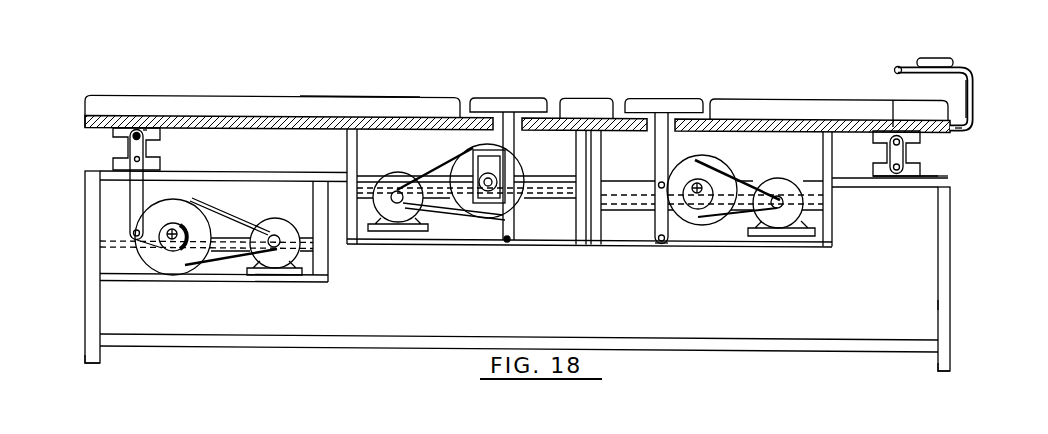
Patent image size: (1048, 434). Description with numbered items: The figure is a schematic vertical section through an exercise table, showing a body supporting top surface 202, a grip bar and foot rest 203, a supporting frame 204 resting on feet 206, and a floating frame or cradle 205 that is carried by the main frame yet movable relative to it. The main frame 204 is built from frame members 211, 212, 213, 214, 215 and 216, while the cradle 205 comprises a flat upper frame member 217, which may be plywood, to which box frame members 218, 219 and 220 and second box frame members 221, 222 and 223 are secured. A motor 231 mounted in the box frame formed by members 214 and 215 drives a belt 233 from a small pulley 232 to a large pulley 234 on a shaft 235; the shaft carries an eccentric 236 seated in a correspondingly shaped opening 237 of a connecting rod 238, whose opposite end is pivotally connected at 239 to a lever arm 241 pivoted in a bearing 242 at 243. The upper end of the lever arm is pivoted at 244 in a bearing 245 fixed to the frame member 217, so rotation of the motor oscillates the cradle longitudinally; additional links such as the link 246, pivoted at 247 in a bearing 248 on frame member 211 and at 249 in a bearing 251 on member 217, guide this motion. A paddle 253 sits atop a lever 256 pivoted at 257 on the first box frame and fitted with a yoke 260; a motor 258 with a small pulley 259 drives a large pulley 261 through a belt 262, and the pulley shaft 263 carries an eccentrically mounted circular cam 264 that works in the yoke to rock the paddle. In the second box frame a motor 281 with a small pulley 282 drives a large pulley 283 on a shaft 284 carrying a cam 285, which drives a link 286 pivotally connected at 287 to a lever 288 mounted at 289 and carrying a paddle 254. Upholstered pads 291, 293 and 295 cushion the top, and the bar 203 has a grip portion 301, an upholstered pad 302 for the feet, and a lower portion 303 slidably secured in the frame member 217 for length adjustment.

The top surface 202 is at (257, 96).
The grip bar and foot rest 203 is at (972, 85).
The supporting frame 204 is at (950, 253).
The floating frame 205 is at (833, 232).
The feet 206 is at (87, 360).
The frame member 211 is at (848, 183).
The frame member 212 is at (862, 343).
The frame member 213 is at (90, 310).
The frame member 214 is at (275, 279).
The frame member 215 is at (330, 274).
The frame member 216 is at (938, 307).
The frame member 217 is at (246, 121).
The box frame member 218 is at (347, 162).
The box frame member 219 is at (457, 238).
The box frame member 220 is at (587, 232).
The second box frame member 221 is at (597, 232).
The second box frame member 222 is at (760, 243).
The second box frame member 223 is at (824, 158).
The motor 231 is at (329, 265).
The small pulley 232 is at (277, 238).
The belt 233 is at (238, 213).
The large pulley 234 is at (163, 210).
The shaft 235 is at (197, 262).
The eccentric 236 is at (170, 252).
The opening 237 is at (172, 245).
The connecting rod 238 is at (138, 246).
The pivot connection 239 is at (103, 244).
The lever arm 241 is at (135, 197).
The bearing 242 is at (146, 156).
The pivot 243 is at (134, 159).
The pivot connection 244 is at (133, 135).
The bearing 245 is at (147, 128).
The link 246 is at (907, 145).
The pivot 247 is at (913, 172).
The bearing 248 is at (937, 177).
The pivot 249 is at (893, 127).
The bearing 251 is at (888, 100).
The paddle 253 is at (508, 110).
The paddle 254 is at (668, 110).
The lever 256 is at (513, 140).
The pivot 257 is at (508, 239).
The motor 258 is at (405, 178).
The pulley 259 is at (395, 202).
The yoke 260 is at (470, 148).
The pulley 261 is at (510, 160).
The belt 262 is at (445, 216).
The shaft 263 is at (486, 191).
The cam 264 is at (491, 191).
The motor 281 is at (775, 180).
The pulley 282 is at (698, 163).
The pulley 283 is at (745, 115).
The shaft 284 is at (699, 203).
The cam 285 is at (705, 201).
The link 286 is at (660, 184).
The pivot connection 287 is at (660, 192).
The lever 288 is at (663, 241).
The pivot 289 is at (662, 270).
The upholstered pad 291 is at (367, 96).
The upholstered pad 293 is at (585, 99).
The upholstered pad 295 is at (807, 110).
The grip portion 301 is at (896, 67).
The upholstered pad 302 is at (937, 60).
The lower portion of bar 303 is at (972, 129).